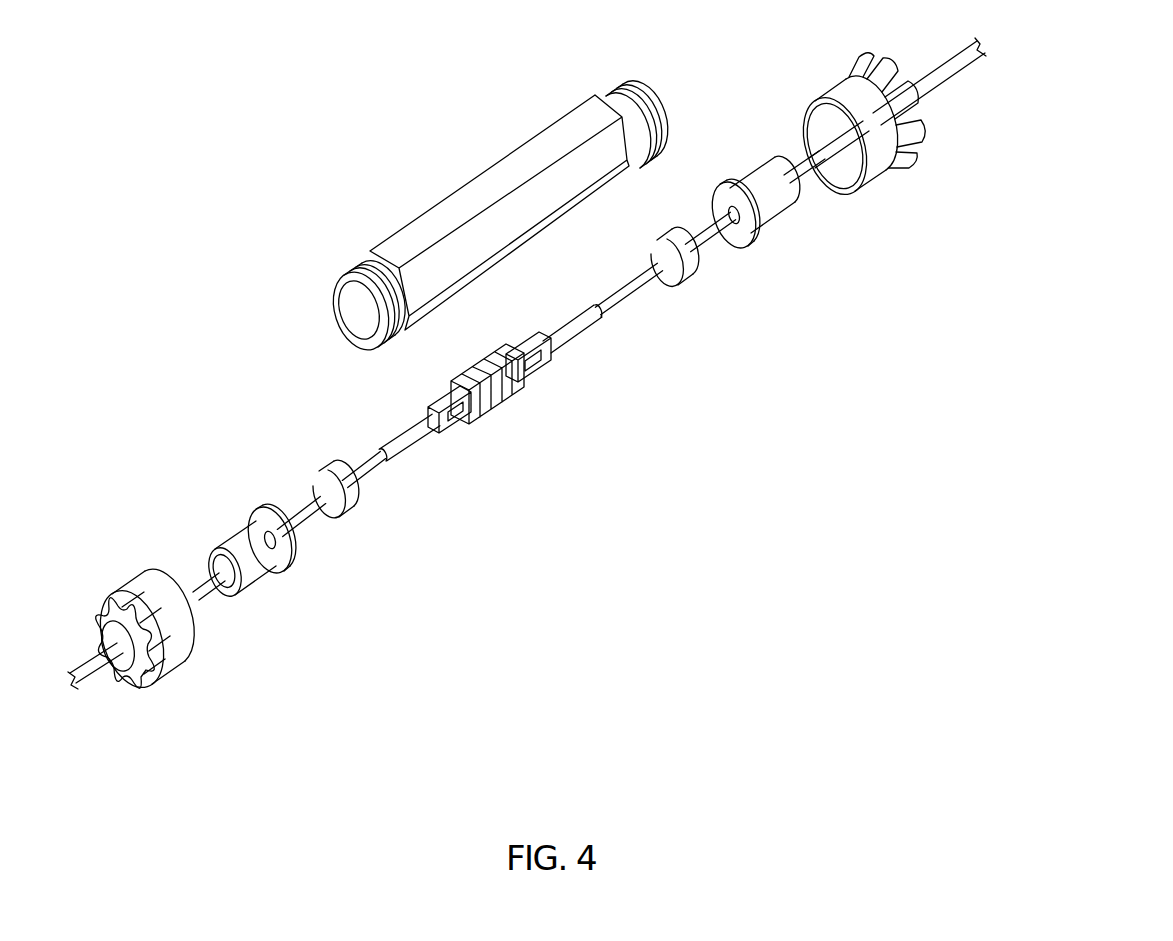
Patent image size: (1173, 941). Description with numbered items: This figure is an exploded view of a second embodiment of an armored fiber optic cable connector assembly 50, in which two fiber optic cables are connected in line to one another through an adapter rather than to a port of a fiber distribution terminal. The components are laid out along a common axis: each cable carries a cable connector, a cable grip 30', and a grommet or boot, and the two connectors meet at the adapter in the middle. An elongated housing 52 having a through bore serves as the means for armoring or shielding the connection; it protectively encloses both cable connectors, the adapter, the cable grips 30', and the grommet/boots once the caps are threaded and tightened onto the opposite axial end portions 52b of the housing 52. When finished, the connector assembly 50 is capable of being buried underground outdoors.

The armored fiber optic cable connector assembly 50 is at (504, 212).
The elongated housing 52 is at (445, 192).
The axial end portions of the housing 52b is at (647, 105).
The cable grip 30' is at (504, 342).